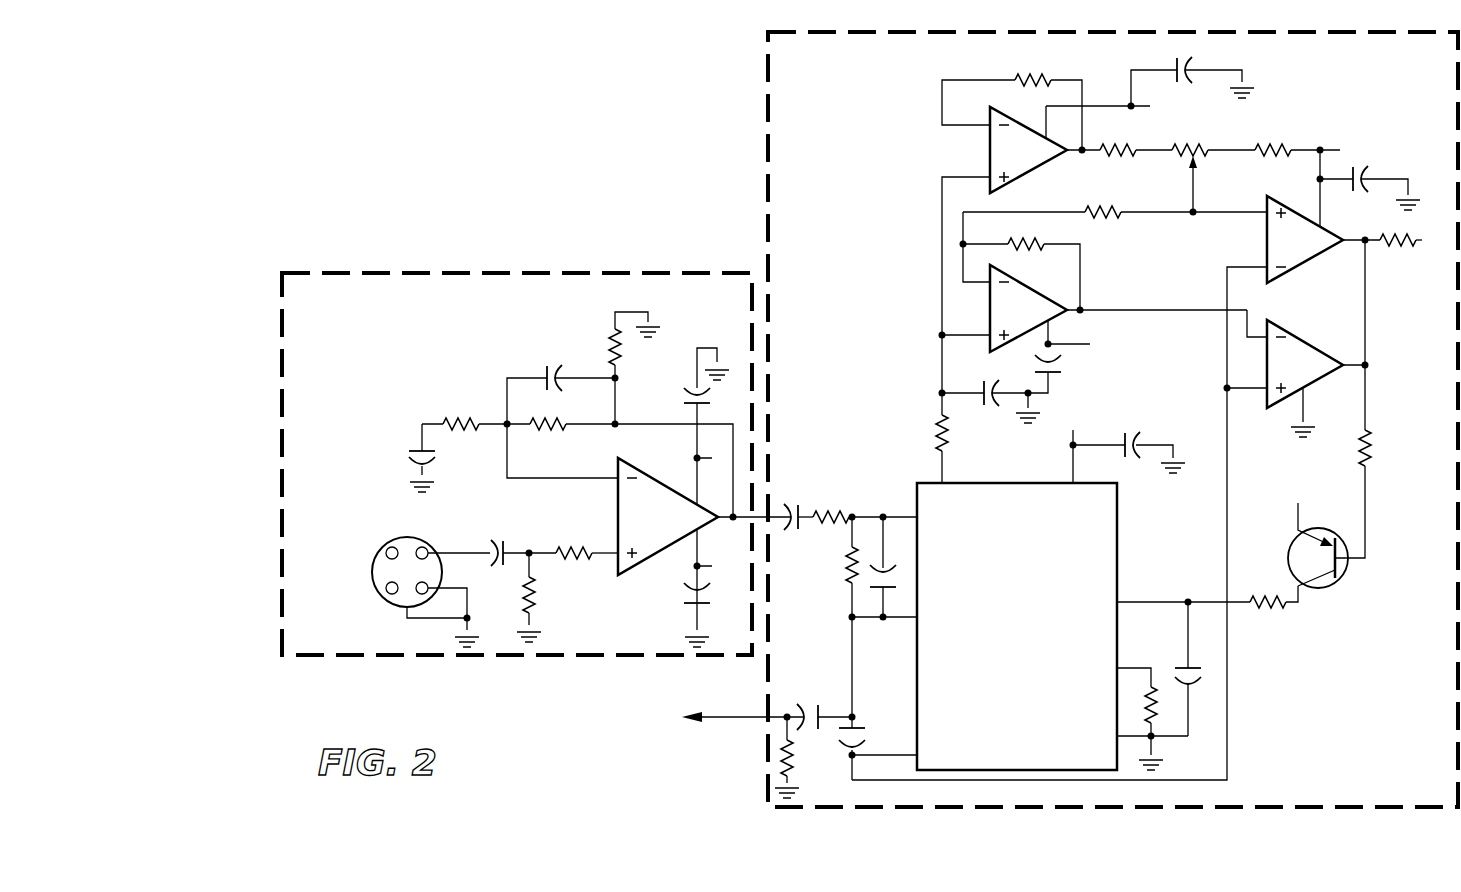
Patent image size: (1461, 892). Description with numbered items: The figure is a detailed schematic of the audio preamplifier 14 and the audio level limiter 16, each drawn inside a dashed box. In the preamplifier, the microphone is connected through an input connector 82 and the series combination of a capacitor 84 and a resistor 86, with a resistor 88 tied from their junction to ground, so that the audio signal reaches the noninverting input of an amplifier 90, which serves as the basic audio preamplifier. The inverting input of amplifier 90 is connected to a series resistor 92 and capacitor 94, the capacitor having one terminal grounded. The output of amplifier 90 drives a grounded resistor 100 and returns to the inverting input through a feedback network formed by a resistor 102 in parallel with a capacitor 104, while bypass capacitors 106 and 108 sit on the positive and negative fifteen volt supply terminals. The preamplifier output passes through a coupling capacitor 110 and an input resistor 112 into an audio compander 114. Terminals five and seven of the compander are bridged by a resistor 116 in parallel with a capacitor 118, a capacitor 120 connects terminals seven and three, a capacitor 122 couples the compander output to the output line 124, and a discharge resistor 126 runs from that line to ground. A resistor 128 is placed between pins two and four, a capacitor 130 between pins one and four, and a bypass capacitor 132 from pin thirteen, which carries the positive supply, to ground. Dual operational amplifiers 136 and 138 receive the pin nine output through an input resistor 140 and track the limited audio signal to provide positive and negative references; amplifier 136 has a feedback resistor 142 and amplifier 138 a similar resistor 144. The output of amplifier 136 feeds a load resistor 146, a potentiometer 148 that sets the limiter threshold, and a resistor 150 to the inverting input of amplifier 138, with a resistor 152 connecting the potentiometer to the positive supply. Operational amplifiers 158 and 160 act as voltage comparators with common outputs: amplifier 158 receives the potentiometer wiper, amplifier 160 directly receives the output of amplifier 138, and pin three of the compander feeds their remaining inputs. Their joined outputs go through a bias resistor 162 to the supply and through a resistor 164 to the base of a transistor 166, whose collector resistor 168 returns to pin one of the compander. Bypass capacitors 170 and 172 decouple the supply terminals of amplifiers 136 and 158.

The audio preamplifier 14 is at (434, 273).
The audio level limiter 16 is at (768, 110).
The input connector 82 is at (388, 544).
The capacitor 84 is at (503, 550).
The resistor 86 is at (576, 530).
The resistor 88 is at (536, 594).
The amplifier 90 is at (704, 540).
The resistor 92 is at (456, 418).
The capacitor 94 is at (409, 458).
The grounded resistor 100 is at (617, 342).
The resistor 102 is at (619, 467).
The capacitor 104 is at (551, 362).
The bypass capacitor 106 is at (688, 396).
The bypass capacitor 108 is at (694, 604).
The coupling capacitor 110 is at (793, 500).
The input resistor 112 is at (847, 512).
The audio compander 114 is at (1059, 523).
The resistor 116 is at (848, 570).
The capacitor 118 is at (879, 590).
The capacitor 120 is at (873, 732).
The capacitor 122 is at (810, 703).
The output line 124 is at (730, 717).
The discharge resistor 126 is at (794, 768).
The resistor 128 is at (1156, 683).
The capacitor 130 is at (1200, 682).
The bypass capacitor 132 is at (1133, 436).
The operational amplifier 136 is at (1061, 247).
The operational amplifier 138 is at (1093, 344).
The input resistor 140 is at (936, 427).
The feedback resistor 142 is at (1034, 81).
The resistor 144 is at (1030, 243).
The load resistor 146 is at (1118, 149).
The potentiometer 148 is at (1192, 150).
The resistor 150 is at (1104, 213).
The resistor 152 is at (1266, 150).
The operational amplifier 158 is at (1323, 215).
The operational amplifier 160 is at (1308, 373).
The bias resistor 162 is at (1398, 249).
The resistor 164 is at (1370, 447).
The transistor 166 is at (1288, 563).
The collector resistor 168 is at (1275, 607).
The bypass capacitor 170 is at (1186, 67).
The bypass capacitor 172 is at (1370, 198).